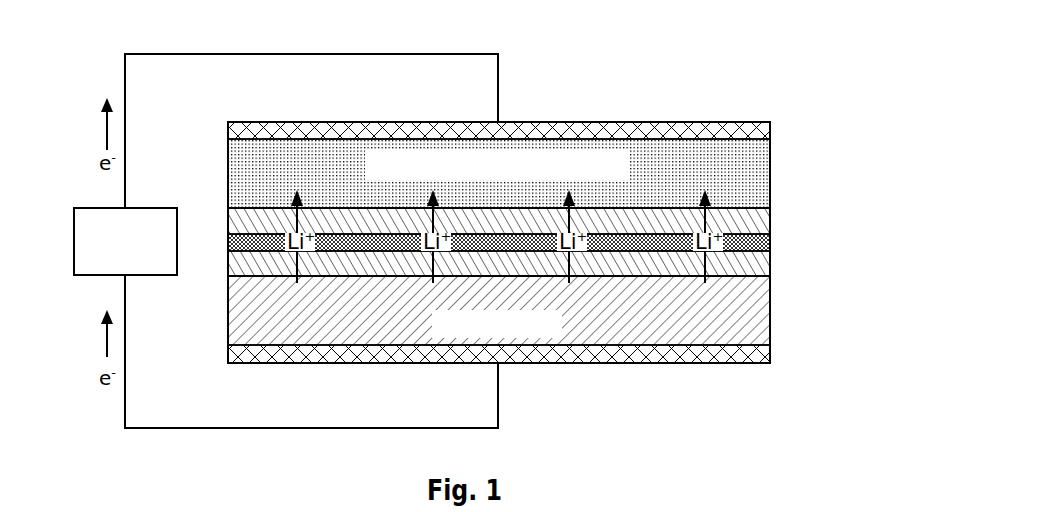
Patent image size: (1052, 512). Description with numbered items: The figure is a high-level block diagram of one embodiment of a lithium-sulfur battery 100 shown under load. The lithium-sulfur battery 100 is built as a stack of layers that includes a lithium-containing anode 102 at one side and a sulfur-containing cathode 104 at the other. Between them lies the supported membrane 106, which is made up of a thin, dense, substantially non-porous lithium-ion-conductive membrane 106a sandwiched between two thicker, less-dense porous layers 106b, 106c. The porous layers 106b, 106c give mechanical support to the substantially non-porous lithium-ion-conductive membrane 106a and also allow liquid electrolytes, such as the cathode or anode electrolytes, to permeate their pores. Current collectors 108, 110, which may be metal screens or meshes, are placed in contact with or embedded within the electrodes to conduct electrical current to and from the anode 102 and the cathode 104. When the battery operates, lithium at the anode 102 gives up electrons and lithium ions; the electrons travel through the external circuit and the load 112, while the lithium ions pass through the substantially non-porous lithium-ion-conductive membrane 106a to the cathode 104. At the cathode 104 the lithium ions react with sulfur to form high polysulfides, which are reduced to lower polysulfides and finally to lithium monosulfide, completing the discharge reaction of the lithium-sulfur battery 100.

The lithium-sulfur battery 100 is at (630, 60).
The lithium-containing anode 102 is at (757, 311).
The sulfur-containing cathode 104 is at (762, 173).
The supported membrane 106 is at (777, 208).
The substantially non-porous lithium-ion-conductive membrane 106a is at (228, 240).
The porous layer 106b is at (228, 222).
The porous layer 106c is at (228, 265).
The current collector 108 is at (762, 131).
The current collector 110 is at (760, 353).
The load 112 is at (88, 243).